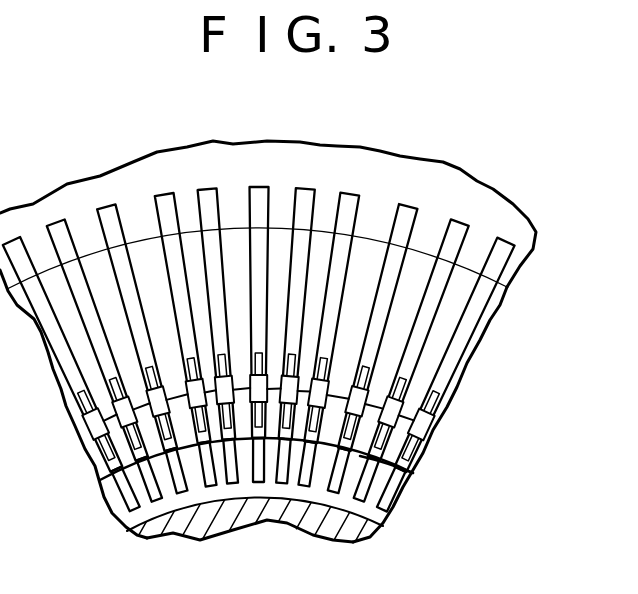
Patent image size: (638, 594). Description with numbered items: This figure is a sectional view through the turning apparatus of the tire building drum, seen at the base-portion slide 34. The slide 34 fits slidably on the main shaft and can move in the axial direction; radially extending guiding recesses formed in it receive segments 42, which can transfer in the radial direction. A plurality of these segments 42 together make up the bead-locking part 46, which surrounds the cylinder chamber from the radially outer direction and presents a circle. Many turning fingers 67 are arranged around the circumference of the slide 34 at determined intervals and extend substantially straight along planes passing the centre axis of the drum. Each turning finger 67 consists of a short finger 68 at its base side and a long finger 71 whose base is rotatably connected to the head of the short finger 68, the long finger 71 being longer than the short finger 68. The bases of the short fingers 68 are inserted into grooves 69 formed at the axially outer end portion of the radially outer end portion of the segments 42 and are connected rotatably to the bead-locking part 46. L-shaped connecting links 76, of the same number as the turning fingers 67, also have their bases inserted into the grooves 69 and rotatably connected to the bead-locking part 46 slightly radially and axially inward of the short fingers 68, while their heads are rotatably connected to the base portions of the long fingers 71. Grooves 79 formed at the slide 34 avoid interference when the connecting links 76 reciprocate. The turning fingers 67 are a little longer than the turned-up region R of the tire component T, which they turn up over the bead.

The tire component T is at (368, 167).
The turned-up region R is at (372, 253).
The turning finger 67 is at (298, 370).
The long finger 71 is at (452, 355).
The short finger 68 is at (440, 435).
The connecting link 76 is at (410, 452).
The groove 69 is at (418, 468).
The groove 79 is at (397, 507).
The segment 42 is at (90, 453).
The bead-locking part 46 is at (92, 470).
The slide 34 is at (122, 503).